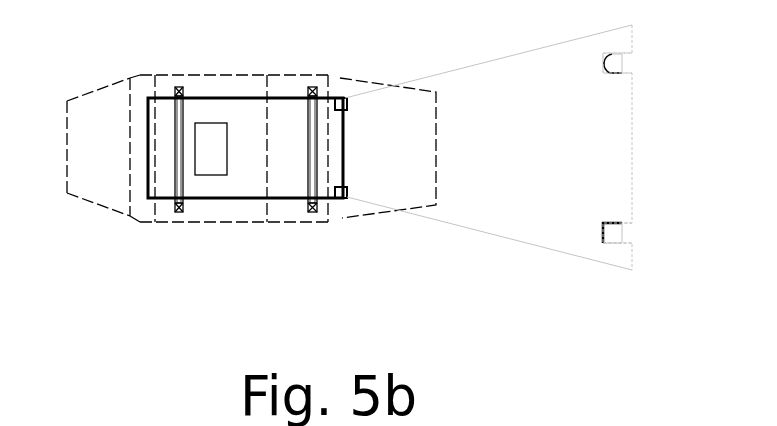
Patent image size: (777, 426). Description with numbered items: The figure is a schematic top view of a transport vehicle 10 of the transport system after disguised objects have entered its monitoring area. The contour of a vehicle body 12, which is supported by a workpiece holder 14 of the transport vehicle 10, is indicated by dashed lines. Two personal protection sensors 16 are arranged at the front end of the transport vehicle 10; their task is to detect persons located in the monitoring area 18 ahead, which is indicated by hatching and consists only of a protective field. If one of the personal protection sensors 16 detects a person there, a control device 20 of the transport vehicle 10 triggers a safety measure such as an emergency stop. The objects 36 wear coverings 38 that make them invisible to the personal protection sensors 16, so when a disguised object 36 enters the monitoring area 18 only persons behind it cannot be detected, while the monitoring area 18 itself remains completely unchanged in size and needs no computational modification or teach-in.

The transport vehicle 10 is at (232, 206).
The vehicle body 12 is at (105, 207).
The workpiece holder 14 is at (317, 132).
The personal protection sensors 16 is at (342, 100).
The monitoring area 18 is at (543, 230).
The control device 20 is at (208, 163).
The objects 36 is at (623, 63).
The coverings 38 is at (613, 73).